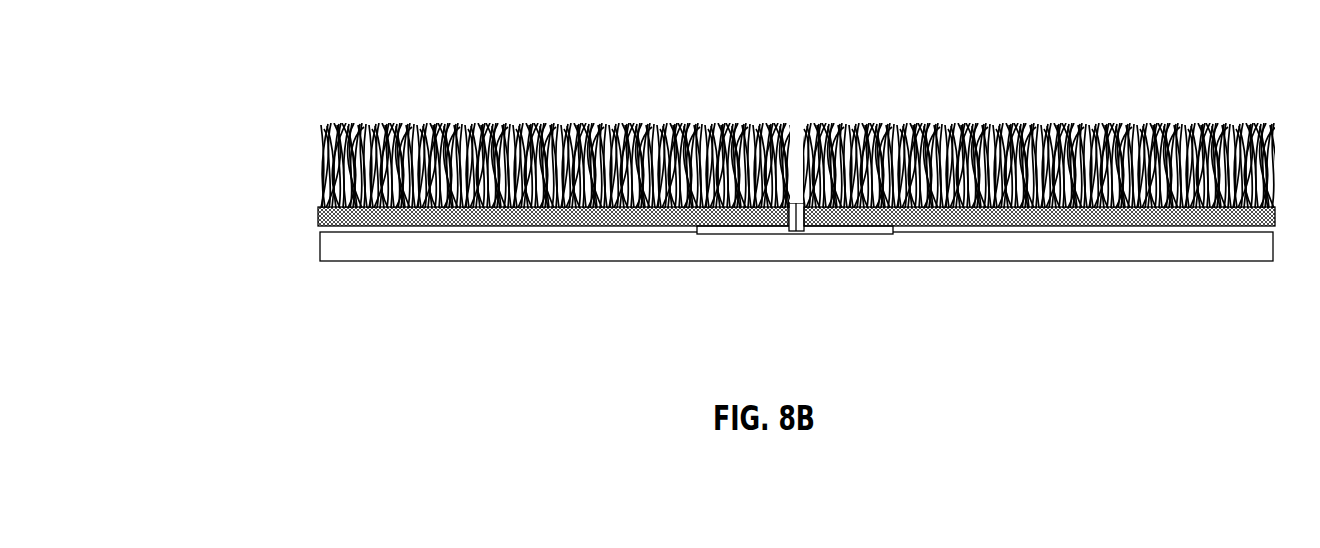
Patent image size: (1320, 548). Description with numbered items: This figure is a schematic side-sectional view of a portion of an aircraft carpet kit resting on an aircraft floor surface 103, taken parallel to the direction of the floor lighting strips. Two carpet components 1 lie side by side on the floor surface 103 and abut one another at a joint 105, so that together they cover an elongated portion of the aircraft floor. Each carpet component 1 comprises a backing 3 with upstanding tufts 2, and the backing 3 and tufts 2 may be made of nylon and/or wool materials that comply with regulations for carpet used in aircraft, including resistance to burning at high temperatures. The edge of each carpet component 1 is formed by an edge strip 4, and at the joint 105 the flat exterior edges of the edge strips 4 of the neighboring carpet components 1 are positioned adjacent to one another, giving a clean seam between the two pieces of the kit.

The carpet component 1 is at (306, 55).
The tufts 2 is at (845, 127).
The backing 3 is at (318, 220).
The edge strip 4 is at (792, 232).
The floor surface 103 is at (1187, 252).
The joint 105 is at (768, 82).